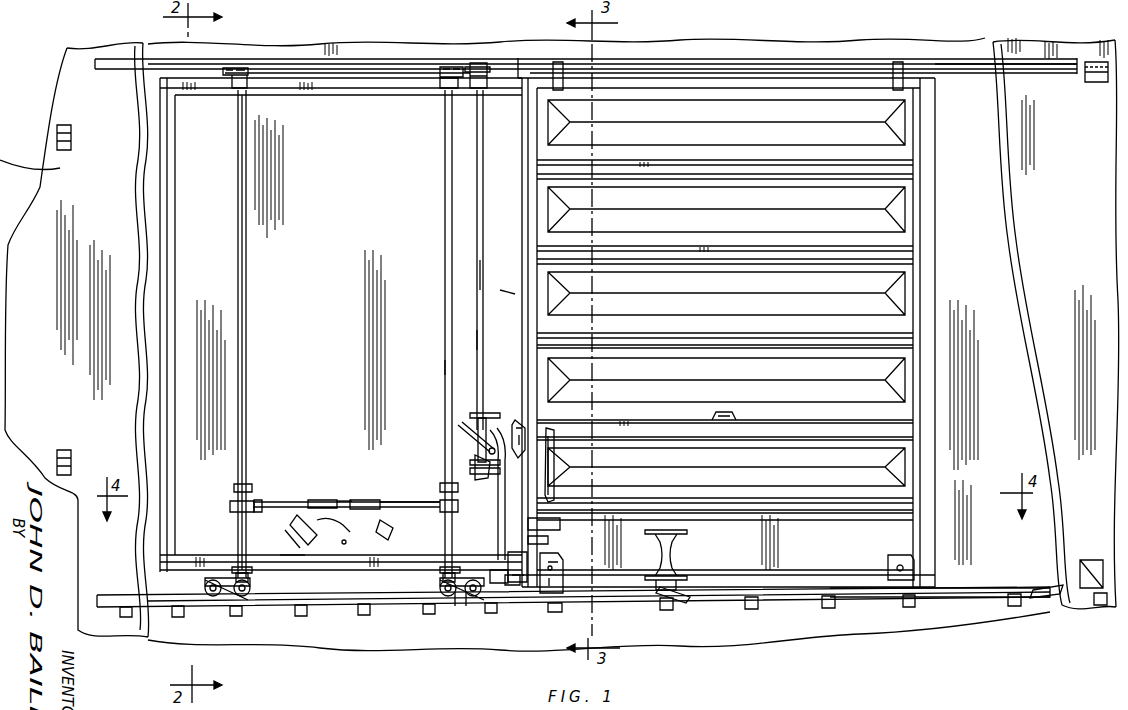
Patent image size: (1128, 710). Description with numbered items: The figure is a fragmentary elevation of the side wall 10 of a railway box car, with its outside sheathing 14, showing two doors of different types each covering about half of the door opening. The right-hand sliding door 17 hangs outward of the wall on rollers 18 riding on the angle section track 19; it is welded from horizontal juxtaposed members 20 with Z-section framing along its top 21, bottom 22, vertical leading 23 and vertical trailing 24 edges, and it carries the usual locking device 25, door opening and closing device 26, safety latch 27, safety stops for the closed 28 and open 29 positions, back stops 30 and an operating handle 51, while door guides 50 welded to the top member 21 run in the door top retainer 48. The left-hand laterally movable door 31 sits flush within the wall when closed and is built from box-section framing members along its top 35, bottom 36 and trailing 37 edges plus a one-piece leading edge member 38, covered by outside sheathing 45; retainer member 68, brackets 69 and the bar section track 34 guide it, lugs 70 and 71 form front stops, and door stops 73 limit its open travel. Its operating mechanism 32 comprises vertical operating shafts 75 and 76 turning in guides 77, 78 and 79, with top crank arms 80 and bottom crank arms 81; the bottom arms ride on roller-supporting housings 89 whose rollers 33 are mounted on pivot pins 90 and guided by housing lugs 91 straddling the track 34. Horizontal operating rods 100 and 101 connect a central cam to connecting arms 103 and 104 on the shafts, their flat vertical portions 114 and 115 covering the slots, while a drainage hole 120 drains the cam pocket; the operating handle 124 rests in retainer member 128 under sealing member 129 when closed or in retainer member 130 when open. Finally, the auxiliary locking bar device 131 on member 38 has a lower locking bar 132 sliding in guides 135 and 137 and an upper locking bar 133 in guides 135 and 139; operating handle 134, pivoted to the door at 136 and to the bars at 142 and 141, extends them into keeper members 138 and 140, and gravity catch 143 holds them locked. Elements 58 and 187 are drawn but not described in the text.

The side wall 10 is at (833, 30).
The outside sheathing 14 is at (993, 273).
The sliding door 17 is at (699, 312).
The rollers 18 is at (563, 585).
The angle section track 19 is at (845, 603).
The horizontal juxtaposed members 20 is at (893, 240).
The top framing member 21 is at (708, 88).
The bottom framing member 22 is at (858, 555).
The vertical leading edge framing member 23 is at (540, 272).
The vertical trailing edge framing member 24 is at (905, 358).
The locking device 25 is at (540, 519).
The door opening and closing device 26 is at (525, 433).
The safety latch 27 is at (668, 558).
The door closed safety stop 28 is at (670, 590).
The door open safety stop 29 is at (1045, 585).
The back stops 30 is at (1095, 82).
The laterally movable door 31 is at (292, 242).
The operating mechanism 32 is at (349, 494).
The rollers 33 is at (214, 602).
The bar section track 34 is at (335, 607).
The top framing member 35 is at (380, 95).
The bottom framing member 36 is at (205, 570).
The vertical trailing edge framing member 37 is at (170, 513).
The leading edge framing member 38 is at (512, 293).
The outside sheathing 45 is at (283, 253).
The door top retainer 48 is at (960, 74).
The door guides 50 is at (560, 90).
The operating handle 51 is at (737, 415).
The sill brackets 58 is at (658, 598).
The retainer member 68 is at (368, 59).
The brackets 69 is at (172, 614).
The lug 70 is at (498, 583).
The lug 71 is at (471, 66).
The door stops 73 is at (73, 135).
The vertical operating shaft 75 is at (443, 367).
The vertical operating shaft 76 is at (246, 330).
The upper shaft guides 77 is at (262, 90).
The lower shaft guides 78 is at (253, 570).
The third guide 79 is at (250, 486).
The top crank arm 80 is at (245, 69).
The bottom crank arm 81 is at (213, 569).
The roller-supporting housing 89 is at (255, 588).
The pivot pins 90 is at (246, 577).
The housing lugs 91 is at (476, 596).
The horizontal operating rod 100 is at (392, 508).
The horizontal operating rod 101 is at (264, 503).
The connecting arm 103 is at (462, 502).
The connecting arm 104 is at (236, 504).
The flat vertical portion 114 is at (366, 498).
The flat vertical portion 115 is at (320, 500).
The drainage hole 120 is at (344, 545).
The operating handle 124 is at (322, 547).
The retainer member 128 is at (292, 572).
The sealing member 129 is at (296, 518).
The retainer member 130 is at (390, 532).
The auxiliary locking bar device 131 is at (474, 337).
The lower locking bar 132 is at (488, 510).
The upper locking bar 133 is at (478, 272).
The operating handle 134 is at (462, 431).
The guides 135 is at (487, 415).
The pivot 136 is at (487, 450).
The guide 137 is at (528, 572).
The keeper member 138 is at (510, 586).
The guide 139 is at (470, 95).
The keeper member 140 is at (484, 70).
The pivot 141 is at (480, 425).
The pivot 142 is at (480, 462).
The gravity catch 143 is at (470, 471).
The keeper bracket 187 is at (522, 556).